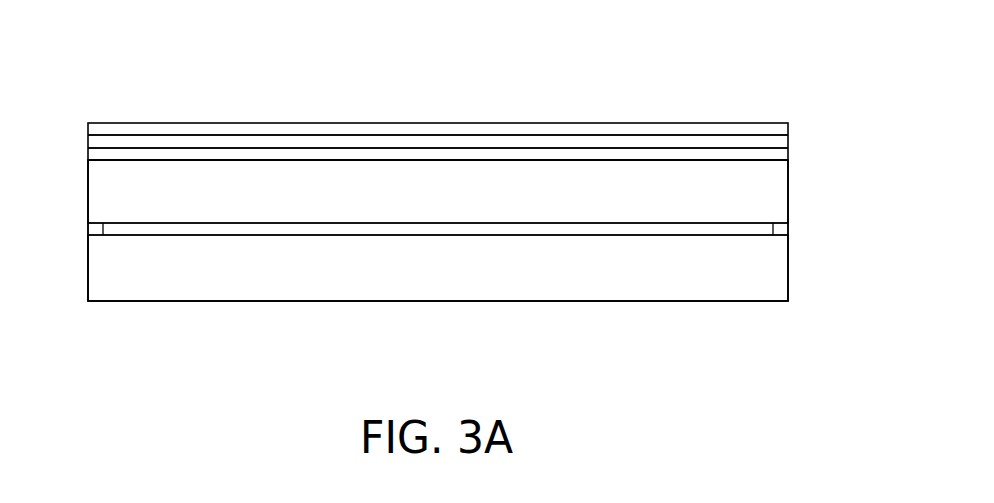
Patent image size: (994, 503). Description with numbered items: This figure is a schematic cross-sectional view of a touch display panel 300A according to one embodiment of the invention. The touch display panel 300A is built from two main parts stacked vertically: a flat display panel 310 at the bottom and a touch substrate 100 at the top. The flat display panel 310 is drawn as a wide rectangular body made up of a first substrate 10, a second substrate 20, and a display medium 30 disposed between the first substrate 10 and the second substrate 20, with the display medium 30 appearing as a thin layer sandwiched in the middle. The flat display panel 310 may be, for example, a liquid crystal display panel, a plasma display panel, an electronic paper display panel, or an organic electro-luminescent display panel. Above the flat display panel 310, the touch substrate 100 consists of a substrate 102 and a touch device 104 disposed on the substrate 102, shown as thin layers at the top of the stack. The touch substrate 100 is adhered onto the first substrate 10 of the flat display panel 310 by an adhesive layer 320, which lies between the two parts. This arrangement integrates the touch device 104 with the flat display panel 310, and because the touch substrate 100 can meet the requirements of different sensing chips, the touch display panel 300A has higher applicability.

The touch display panel 300A is at (788, 357).
The touch substrate 100 is at (760, 44).
The touch device 104 is at (675, 130).
The substrate 102 is at (743, 143).
The adhesive layer 320 is at (785, 153).
The flat display panel 310 is at (795, 162).
The first substrate 10 is at (102, 190).
The display medium 30 is at (113, 232).
The second substrate 20 is at (102, 278).